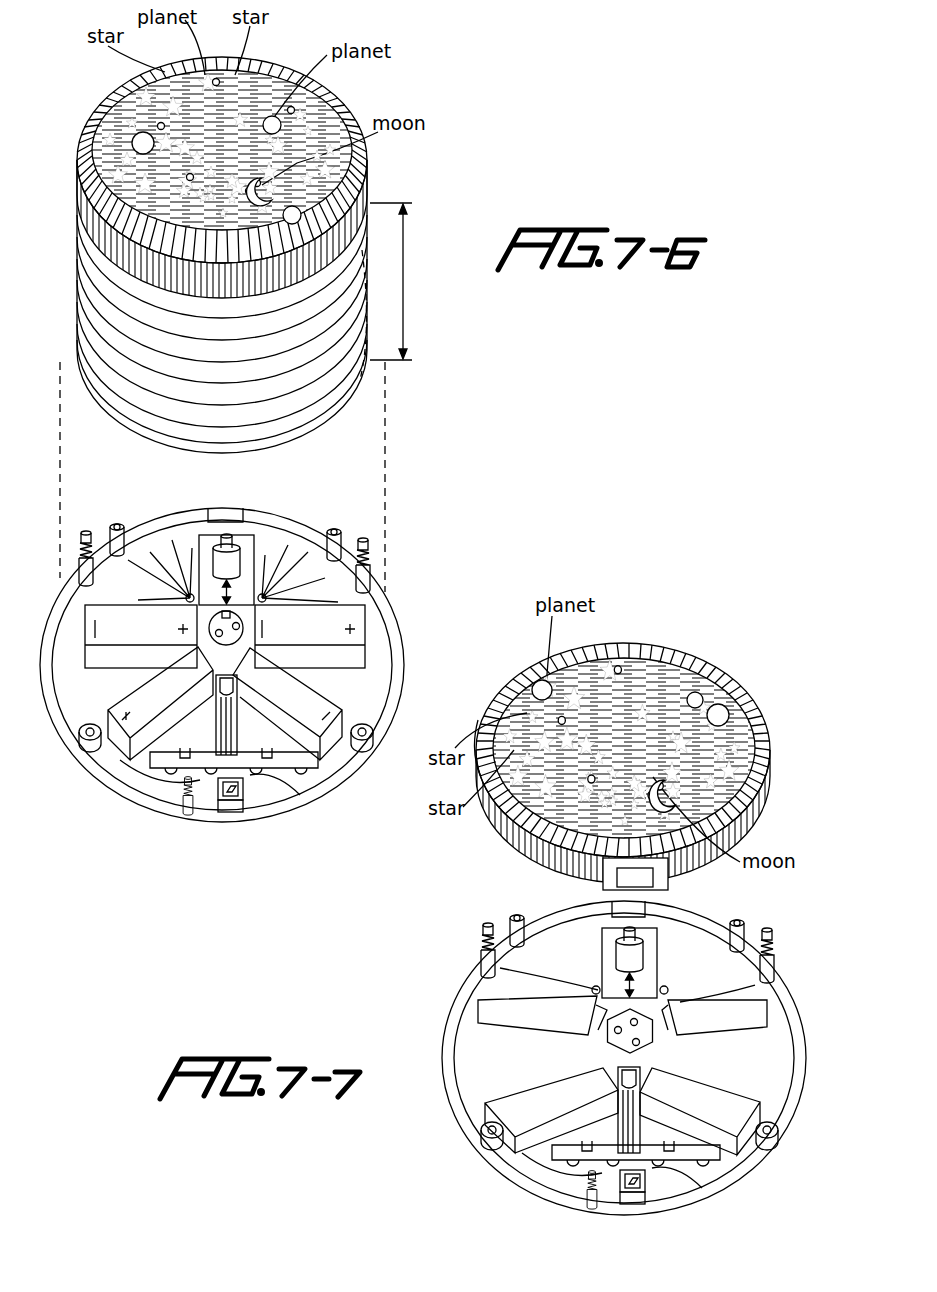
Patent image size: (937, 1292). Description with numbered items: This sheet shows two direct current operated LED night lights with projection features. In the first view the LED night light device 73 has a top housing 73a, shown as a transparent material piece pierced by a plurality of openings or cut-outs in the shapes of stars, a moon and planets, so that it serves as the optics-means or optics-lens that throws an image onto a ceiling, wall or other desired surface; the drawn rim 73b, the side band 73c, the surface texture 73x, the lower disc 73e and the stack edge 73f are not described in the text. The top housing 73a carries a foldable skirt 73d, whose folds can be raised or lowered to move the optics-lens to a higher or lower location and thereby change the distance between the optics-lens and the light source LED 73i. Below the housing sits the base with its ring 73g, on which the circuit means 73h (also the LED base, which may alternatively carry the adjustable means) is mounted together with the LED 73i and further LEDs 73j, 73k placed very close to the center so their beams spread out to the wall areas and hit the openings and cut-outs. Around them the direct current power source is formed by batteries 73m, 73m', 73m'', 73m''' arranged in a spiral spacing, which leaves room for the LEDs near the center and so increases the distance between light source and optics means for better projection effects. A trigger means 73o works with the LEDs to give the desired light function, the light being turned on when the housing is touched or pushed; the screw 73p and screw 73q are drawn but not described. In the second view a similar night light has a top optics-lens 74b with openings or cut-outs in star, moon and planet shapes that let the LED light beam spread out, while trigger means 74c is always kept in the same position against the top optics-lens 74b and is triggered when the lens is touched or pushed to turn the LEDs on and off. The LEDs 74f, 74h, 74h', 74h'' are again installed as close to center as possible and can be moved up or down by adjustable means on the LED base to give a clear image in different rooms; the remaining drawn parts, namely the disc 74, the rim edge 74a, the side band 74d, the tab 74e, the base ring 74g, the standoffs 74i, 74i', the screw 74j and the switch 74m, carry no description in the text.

In FIG. 7-6, the LED night light device with projection features 73 is at (310, 118).
In FIG. 7-6, the top housing / optics-means 73a is at (250, 120).
In FIG. 7-6, the knurled rim 73b is at (122, 84).
In FIG. 7-6, the disc side band 73c is at (375, 205).
In FIG. 7-6, the foldable skirt 73d is at (67, 193).
In FIG. 7-6, the lowermost disc 73e is at (105, 400).
In FIG. 7-6, the stack side edge 73f is at (345, 400).
In FIG. 7-6, the base ring 73g is at (125, 755).
In FIG. 7-6, the circuit means / LED base 73h is at (243, 636).
In FIG. 7-6, the LED 73i is at (228, 614).
In FIG. 7-6, the LED 73j is at (236, 614).
In FIG. 7-6, the LED 73k is at (187, 597).
In FIG. 7-6, the power source (battery) 73m is at (356, 656).
In FIG. 7-6, the power source (battery) 73m' is at (315, 739).
In FIG. 7-6, the power source (battery) 73m'' is at (116, 734).
In FIG. 7-6, the power source (battery) 73m''' is at (102, 679).
In FIG. 7-6, the trigger means 73o is at (232, 812).
In FIG. 7-6, the spring screw 73p is at (182, 800).
In FIG. 7-6, the spring screw 73q is at (86, 533).
In FIG. 7-6, the star field texture 73x is at (88, 198).
In FIG. 7-7, the celestial display disc 74 is at (707, 662).
In FIG. 7-7, the rim edge 74a is at (508, 687).
In FIG. 7-7, the top optics-lens 74b is at (542, 798).
In FIG. 7-7, the trigger means 74c is at (770, 780).
In FIG. 7-7, the disc side band 74d is at (742, 835).
In FIG. 7-7, the tab 74e is at (662, 873).
In FIG. 7-7, the LED 74f is at (642, 1018).
In FIG. 7-7, the base ring 74g is at (765, 1018).
In FIG. 7-7, the LED 74h is at (746, 1081).
In FIG. 7-7, the LED 74h' is at (505, 1023).
In FIG. 7-7, the LED 74h'' is at (467, 944).
In FIG. 7-7, the standoff 74i is at (771, 1178).
In FIG. 7-7, the standoff 74i' is at (454, 1169).
In FIG. 7-7, the spring screw 74j is at (583, 1195).
In FIG. 7-7, the switch 74m is at (647, 1198).